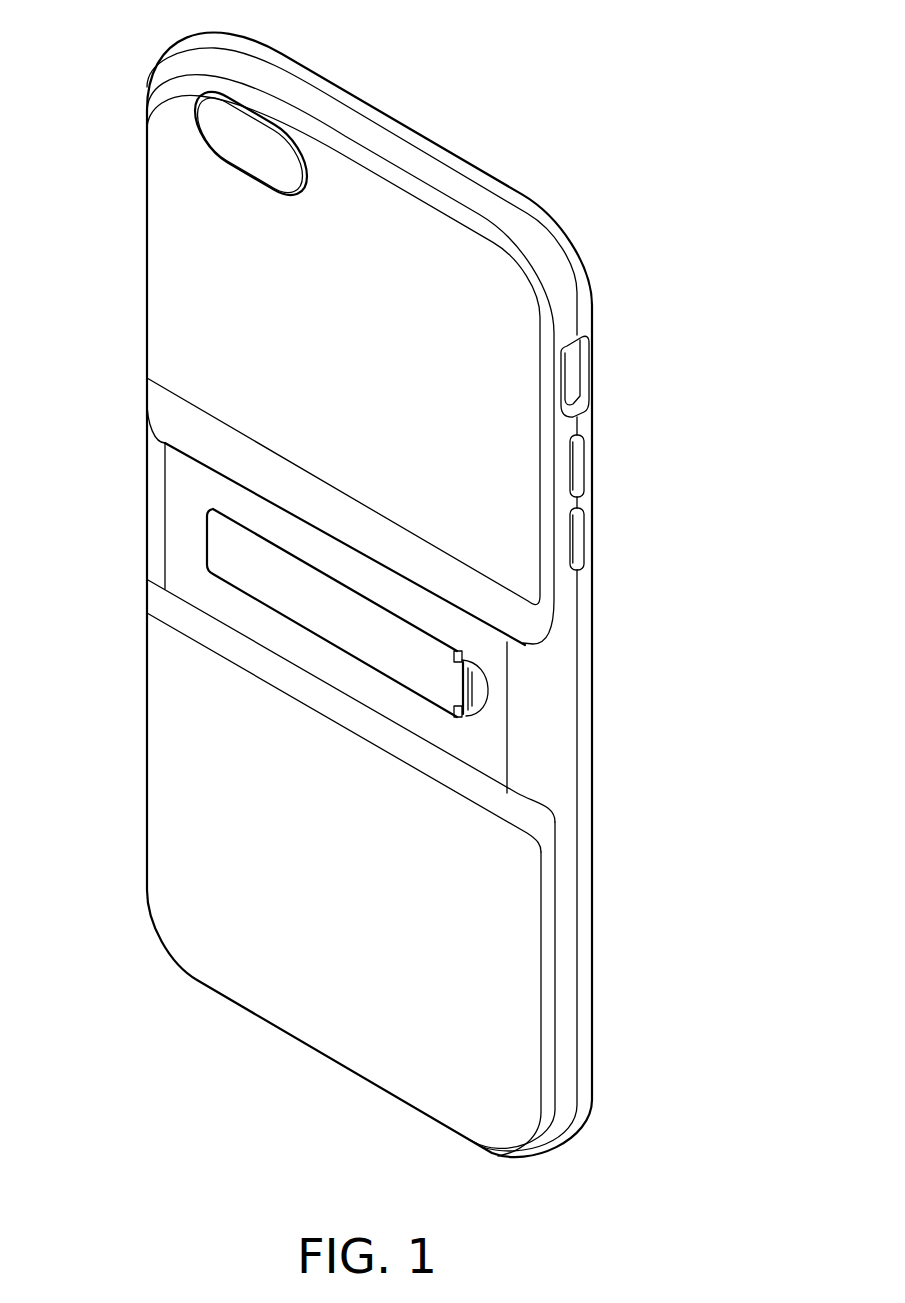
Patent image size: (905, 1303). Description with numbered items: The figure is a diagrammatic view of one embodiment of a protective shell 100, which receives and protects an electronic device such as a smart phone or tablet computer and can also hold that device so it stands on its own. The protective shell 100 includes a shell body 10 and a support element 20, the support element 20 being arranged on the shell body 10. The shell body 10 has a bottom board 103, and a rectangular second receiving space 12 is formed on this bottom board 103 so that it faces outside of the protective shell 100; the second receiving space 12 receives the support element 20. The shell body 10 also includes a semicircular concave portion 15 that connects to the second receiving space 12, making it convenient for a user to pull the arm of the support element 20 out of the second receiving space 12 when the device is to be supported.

The protective shell 100 is at (468, 83).
The shell body 10 is at (549, 261).
The second receiving space 12 is at (460, 653).
The concave portion 15 is at (480, 700).
The support element 20 is at (230, 557).
The bottom board 103 is at (543, 745).